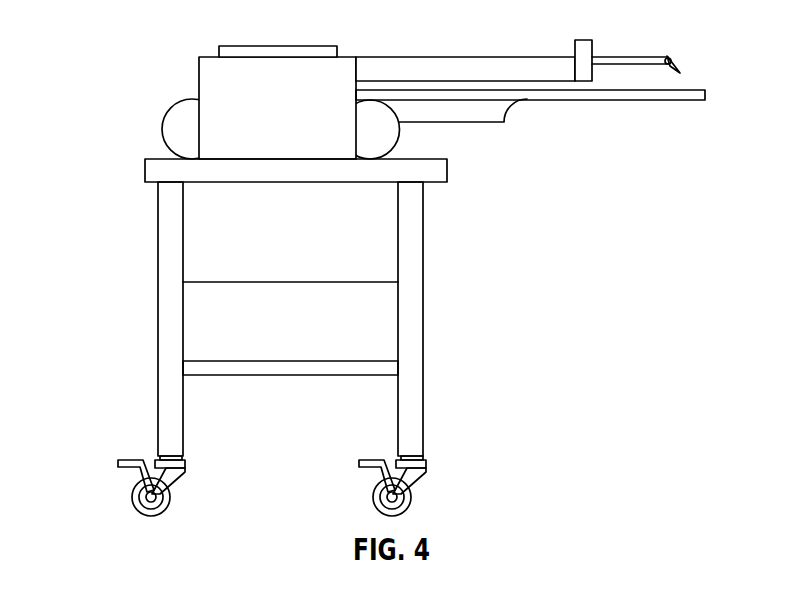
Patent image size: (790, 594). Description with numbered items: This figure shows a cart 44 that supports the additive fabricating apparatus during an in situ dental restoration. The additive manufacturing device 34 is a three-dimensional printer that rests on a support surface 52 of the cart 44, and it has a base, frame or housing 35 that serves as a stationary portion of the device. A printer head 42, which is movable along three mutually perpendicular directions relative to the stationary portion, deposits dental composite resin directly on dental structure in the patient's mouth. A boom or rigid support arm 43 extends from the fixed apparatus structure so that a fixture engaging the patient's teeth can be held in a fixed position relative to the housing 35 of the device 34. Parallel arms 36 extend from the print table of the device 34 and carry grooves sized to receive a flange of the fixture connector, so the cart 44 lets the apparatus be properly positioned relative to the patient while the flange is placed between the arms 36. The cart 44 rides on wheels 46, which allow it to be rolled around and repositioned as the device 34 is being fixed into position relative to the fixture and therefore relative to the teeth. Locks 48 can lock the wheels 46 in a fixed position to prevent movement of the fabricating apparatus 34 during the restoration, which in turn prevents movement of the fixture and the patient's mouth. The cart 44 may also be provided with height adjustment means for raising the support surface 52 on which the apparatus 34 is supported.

The additive manufacturing device 34 is at (113, 50).
The housing 35 is at (240, 149).
The arms 36 is at (695, 88).
The printer head 42 is at (627, 56).
The rigid support arm 43 is at (555, 95).
The cart 44 is at (417, 292).
The wheels 46 is at (132, 492).
The locks 48 is at (131, 461).
The support surface 52 is at (442, 158).